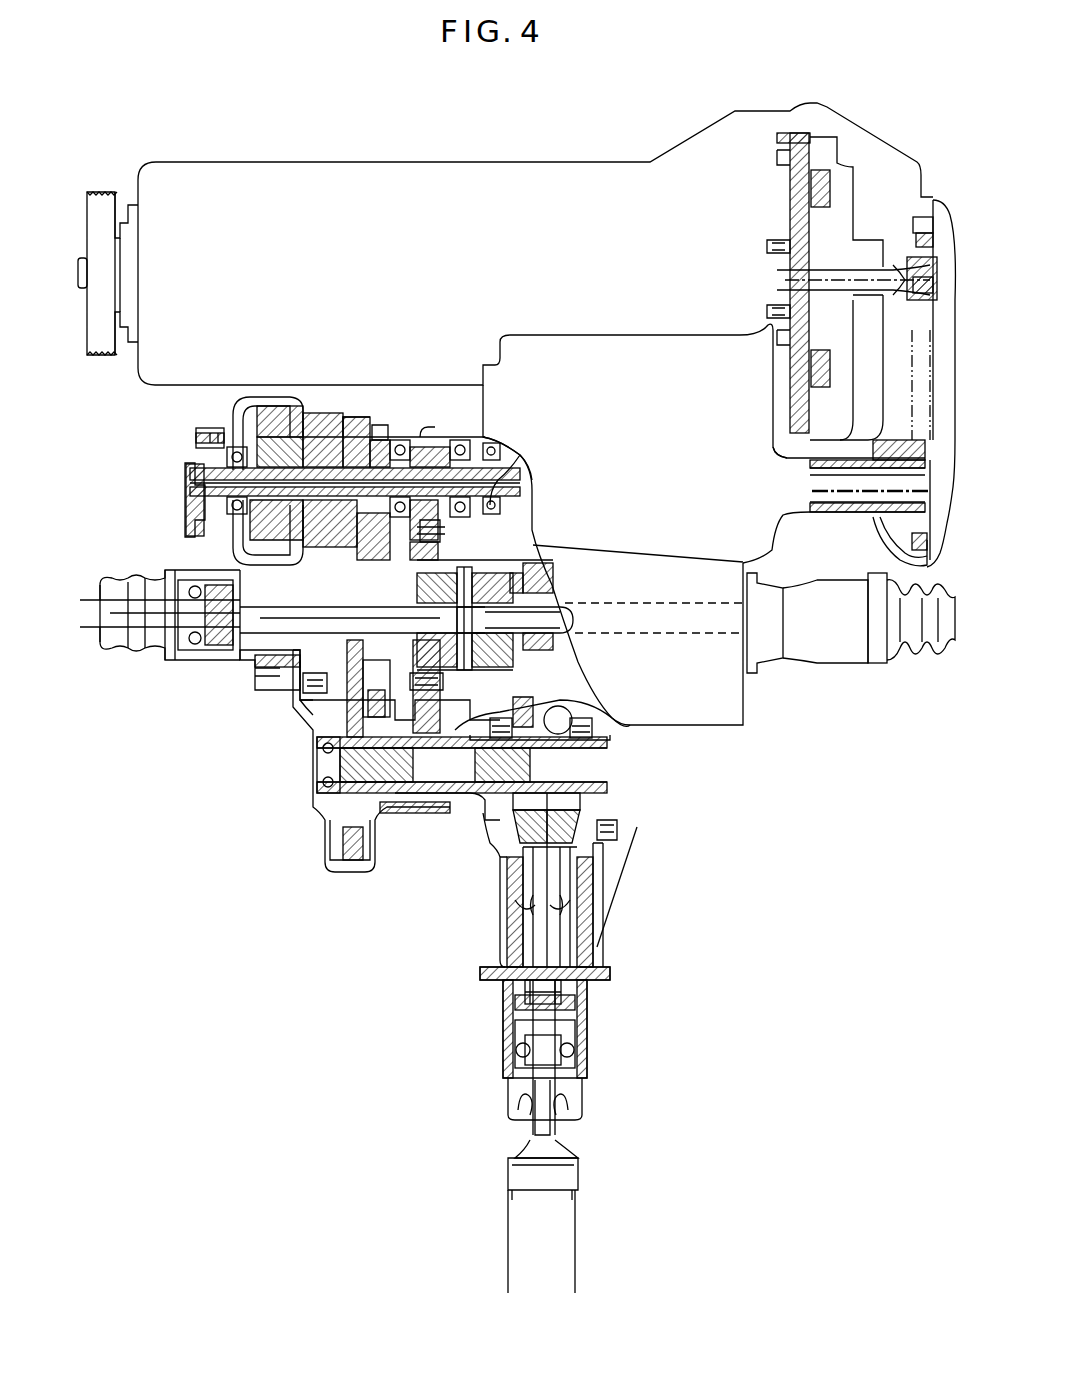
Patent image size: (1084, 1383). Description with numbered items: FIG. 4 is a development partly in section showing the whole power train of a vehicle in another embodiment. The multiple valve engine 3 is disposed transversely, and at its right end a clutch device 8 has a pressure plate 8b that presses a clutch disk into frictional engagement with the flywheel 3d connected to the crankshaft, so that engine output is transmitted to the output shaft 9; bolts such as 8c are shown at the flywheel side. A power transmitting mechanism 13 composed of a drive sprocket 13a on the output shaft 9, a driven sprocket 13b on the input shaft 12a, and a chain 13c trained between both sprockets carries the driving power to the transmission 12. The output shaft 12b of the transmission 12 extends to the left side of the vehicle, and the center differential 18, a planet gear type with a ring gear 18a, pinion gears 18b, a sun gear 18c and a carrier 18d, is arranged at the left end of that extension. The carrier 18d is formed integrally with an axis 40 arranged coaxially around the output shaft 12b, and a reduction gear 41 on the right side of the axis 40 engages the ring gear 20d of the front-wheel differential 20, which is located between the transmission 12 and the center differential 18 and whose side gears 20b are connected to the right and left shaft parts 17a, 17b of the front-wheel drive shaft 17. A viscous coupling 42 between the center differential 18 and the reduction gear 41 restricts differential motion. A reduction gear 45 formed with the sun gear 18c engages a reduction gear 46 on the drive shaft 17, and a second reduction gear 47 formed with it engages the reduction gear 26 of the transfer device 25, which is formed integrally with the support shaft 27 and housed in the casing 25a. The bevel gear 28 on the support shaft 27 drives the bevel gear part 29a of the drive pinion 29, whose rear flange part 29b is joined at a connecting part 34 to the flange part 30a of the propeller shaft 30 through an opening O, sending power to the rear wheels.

The multiple valve engine 3 is at (422, 148).
The flywheel 3d is at (778, 395).
The clutch device 8 is at (855, 147).
The pressure plate 8b is at (822, 207).
The flywheel bolt 8c is at (826, 388).
The output shaft 9 is at (828, 292).
The transmission 12 is at (642, 555).
The input shaft 12a is at (812, 480).
The output shaft 12b is at (520, 470).
The power transmitting mechanism 13 is at (937, 198).
The drive sprocket 13a is at (913, 228).
The driven sprocket 13b is at (895, 540).
The chain 13c is at (912, 348).
The drive shaft 17 is at (672, 622).
The right shaft part 17a is at (706, 638).
The left shaft part 17b is at (255, 648).
The center differential 18 is at (236, 385).
The ring gear 18a is at (275, 392).
The pinion gears 18b is at (242, 440).
The sun gear 18c is at (185, 543).
The carrier 18d is at (185, 458).
The front-wheel differential 20 is at (522, 562).
The side gears 20b is at (548, 637).
The ring gear 20d is at (462, 585).
The transfer device 25 is at (458, 832).
The casing 25a is at (375, 880).
The reduction gear 26 is at (345, 720).
The support shaft 27 is at (425, 770).
The bevel gear 28 is at (500, 825).
The drive pinion 29 is at (565, 905).
The bevel gear part 29a is at (615, 822).
The flange part 29b is at (615, 968).
The propeller shaft 30 is at (548, 1232).
The flange part 30a is at (600, 988).
The connecting part 34 is at (718, 965).
The axis 40 is at (350, 435).
The reduction gear 41 is at (432, 445).
The viscous coupling 42 is at (350, 540).
The reduction gear 45 is at (320, 410).
The reduction gear 46 is at (300, 690).
The second reduction gear 47 is at (372, 680).
The opening O is at (590, 948).